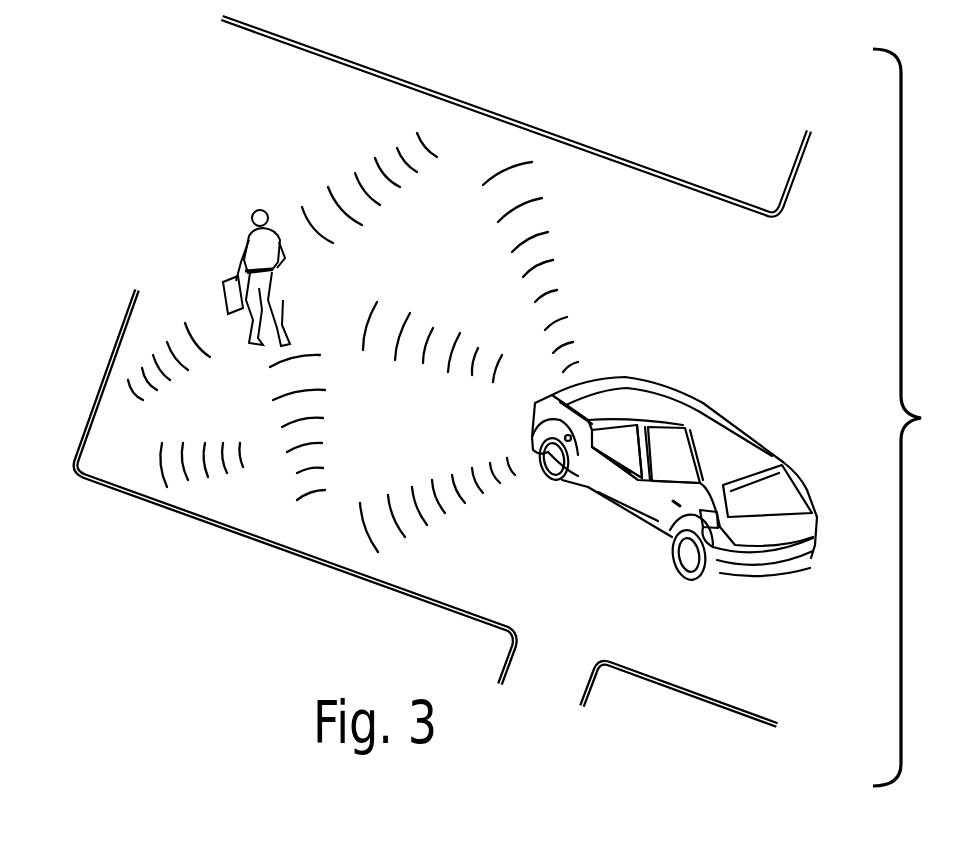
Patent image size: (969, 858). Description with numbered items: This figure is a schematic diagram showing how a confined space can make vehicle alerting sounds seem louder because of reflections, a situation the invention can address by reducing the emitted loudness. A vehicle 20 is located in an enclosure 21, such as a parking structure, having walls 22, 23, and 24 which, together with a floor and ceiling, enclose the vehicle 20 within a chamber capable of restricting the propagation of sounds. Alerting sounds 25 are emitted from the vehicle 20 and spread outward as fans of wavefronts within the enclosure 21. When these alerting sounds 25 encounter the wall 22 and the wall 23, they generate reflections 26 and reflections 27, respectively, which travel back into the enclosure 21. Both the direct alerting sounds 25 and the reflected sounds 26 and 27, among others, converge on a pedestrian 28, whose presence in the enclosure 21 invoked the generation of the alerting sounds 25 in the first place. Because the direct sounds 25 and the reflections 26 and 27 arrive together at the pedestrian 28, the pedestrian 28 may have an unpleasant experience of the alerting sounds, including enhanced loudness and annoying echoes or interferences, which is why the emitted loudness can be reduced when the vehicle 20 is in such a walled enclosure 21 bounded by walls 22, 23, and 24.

The vehicle 20 is at (765, 438).
The enclosure 21 is at (781, 320).
The wall 22 is at (658, 172).
The wall 23 is at (140, 497).
The wall 24 is at (727, 707).
The alerting sounds 25 is at (556, 288).
The reflections 26 is at (375, 167).
The reflections 27 is at (307, 467).
The pedestrian 28 is at (241, 243).